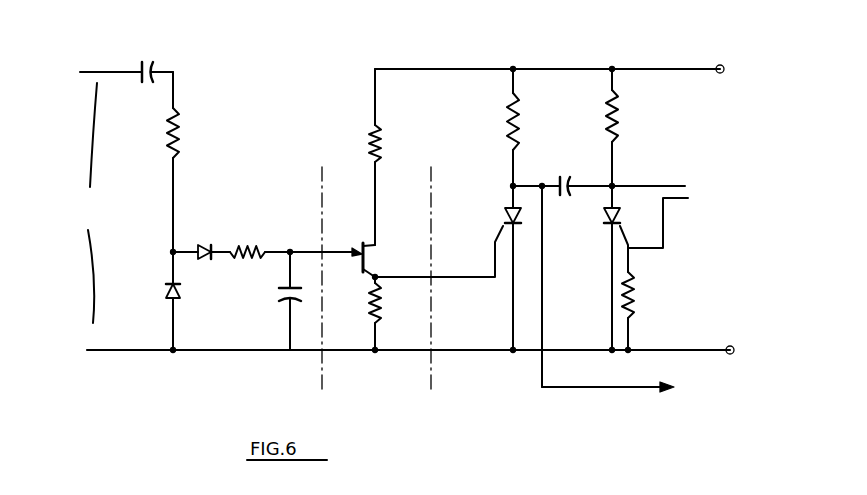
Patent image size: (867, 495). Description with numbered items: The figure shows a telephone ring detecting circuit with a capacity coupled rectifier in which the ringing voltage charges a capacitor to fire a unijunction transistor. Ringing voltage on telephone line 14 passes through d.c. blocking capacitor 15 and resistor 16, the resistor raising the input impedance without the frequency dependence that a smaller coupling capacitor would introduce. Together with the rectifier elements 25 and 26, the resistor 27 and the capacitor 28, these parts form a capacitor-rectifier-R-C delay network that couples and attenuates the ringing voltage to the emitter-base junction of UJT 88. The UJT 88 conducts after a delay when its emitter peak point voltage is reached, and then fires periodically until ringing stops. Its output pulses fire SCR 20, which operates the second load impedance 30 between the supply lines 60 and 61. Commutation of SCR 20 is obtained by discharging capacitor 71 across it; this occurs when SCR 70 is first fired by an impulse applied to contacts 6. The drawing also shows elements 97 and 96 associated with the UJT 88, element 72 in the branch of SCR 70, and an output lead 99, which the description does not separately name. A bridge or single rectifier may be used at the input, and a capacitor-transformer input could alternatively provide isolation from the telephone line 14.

The telephone line 14 is at (85, 203).
The d.c. blocking capacitor 15 is at (163, 64).
The resistor 16 is at (185, 148).
The rectifier of delay network 25 is at (161, 306).
The rectifier of delay network 26 is at (197, 246).
The resistor of delay network 27 is at (250, 246).
The capacitor of delay network 28 is at (284, 300).
The UJT 88 is at (340, 243).
The collector resistor 97 is at (369, 156).
The emitter resistor 96 is at (366, 313).
The second load impedance 30 is at (500, 128).
The SCR 20 is at (504, 209).
The capacitor 71 is at (567, 163).
The resistor 72 is at (622, 138).
The SCR 70 is at (628, 212).
The contacts 6 is at (690, 195).
The supply line 60 is at (730, 79).
The supply line 61 is at (738, 363).
The output lead 99 is at (668, 395).